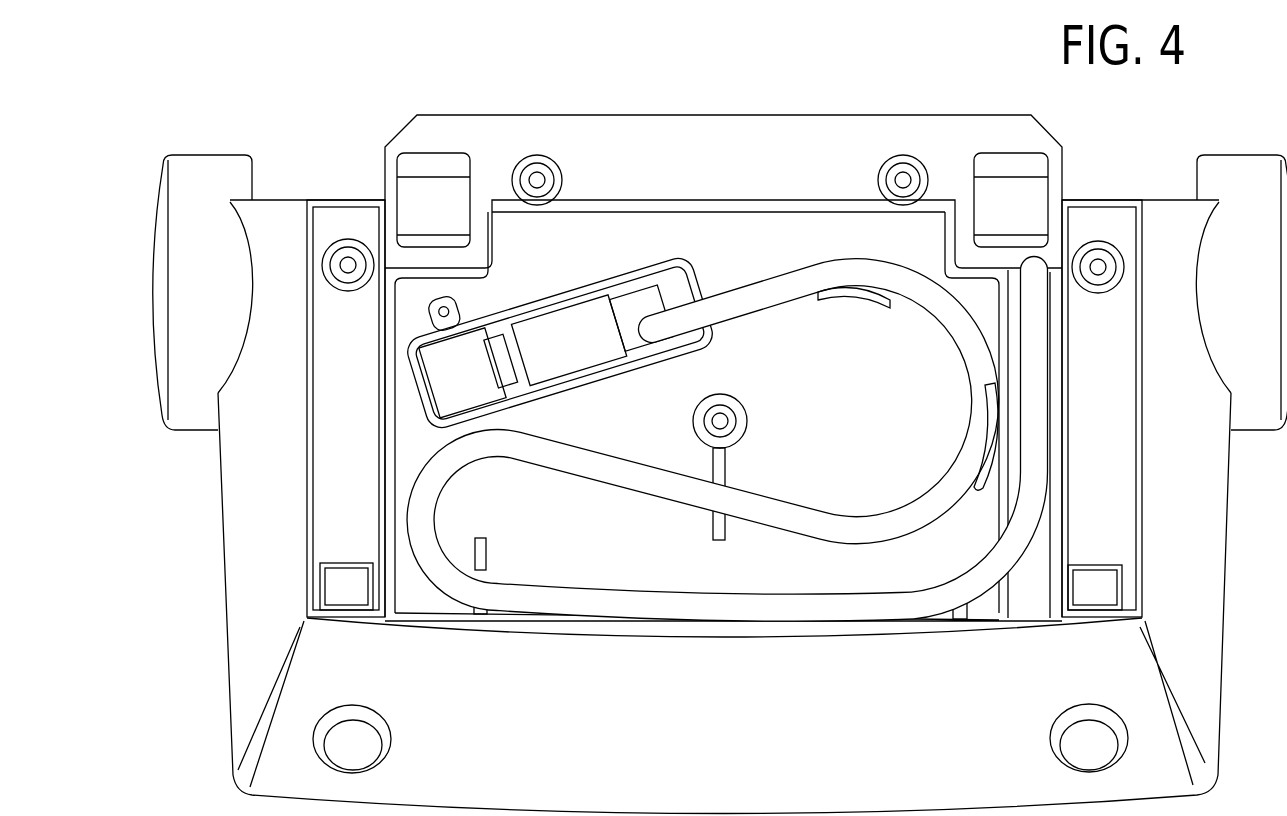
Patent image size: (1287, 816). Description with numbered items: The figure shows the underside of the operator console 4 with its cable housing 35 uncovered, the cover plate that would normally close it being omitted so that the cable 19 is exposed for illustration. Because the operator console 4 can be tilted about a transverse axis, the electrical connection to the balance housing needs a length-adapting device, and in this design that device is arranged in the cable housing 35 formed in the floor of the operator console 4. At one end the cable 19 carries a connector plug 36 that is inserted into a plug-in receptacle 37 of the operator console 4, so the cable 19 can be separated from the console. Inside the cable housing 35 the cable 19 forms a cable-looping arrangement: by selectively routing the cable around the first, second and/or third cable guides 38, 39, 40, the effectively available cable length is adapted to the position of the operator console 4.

The operator console 4 is at (276, 106).
The cable 19 is at (756, 293).
The cable housing 35 is at (413, 586).
The connector plug 36 is at (580, 330).
The plug-in receptacle 37 is at (462, 353).
The cable guide 38 is at (487, 545).
The cable guide 39 is at (850, 296).
The cable guide 40 is at (995, 433).